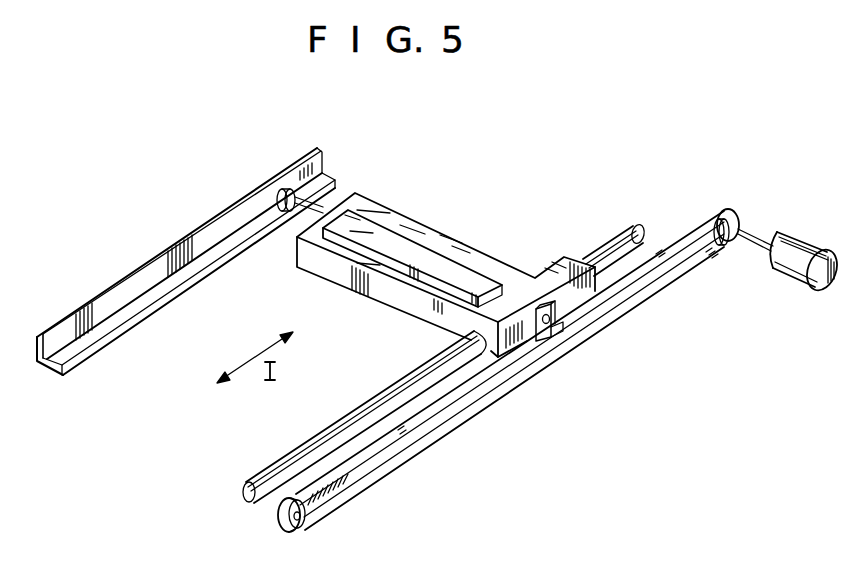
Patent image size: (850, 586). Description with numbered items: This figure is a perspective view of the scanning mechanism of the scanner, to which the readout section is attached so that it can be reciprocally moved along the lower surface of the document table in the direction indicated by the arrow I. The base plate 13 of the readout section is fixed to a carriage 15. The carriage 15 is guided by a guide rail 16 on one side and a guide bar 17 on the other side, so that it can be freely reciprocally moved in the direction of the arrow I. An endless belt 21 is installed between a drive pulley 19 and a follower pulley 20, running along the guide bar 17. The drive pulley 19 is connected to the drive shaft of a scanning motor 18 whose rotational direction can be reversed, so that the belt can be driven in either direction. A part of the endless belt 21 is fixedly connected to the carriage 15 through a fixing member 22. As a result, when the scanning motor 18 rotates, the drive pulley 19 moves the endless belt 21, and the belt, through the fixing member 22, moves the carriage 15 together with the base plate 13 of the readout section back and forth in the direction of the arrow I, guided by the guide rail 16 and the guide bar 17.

The base plate 13 is at (400, 247).
The carriage 15 is at (453, 249).
The guide rail 16 is at (178, 245).
The guide bar 17 is at (610, 242).
The scanning motor 18 is at (781, 273).
The drive pulley 19 is at (740, 220).
The follower pulley 20 is at (305, 522).
The endless belt 21 is at (437, 437).
The fixing member 22 is at (557, 330).